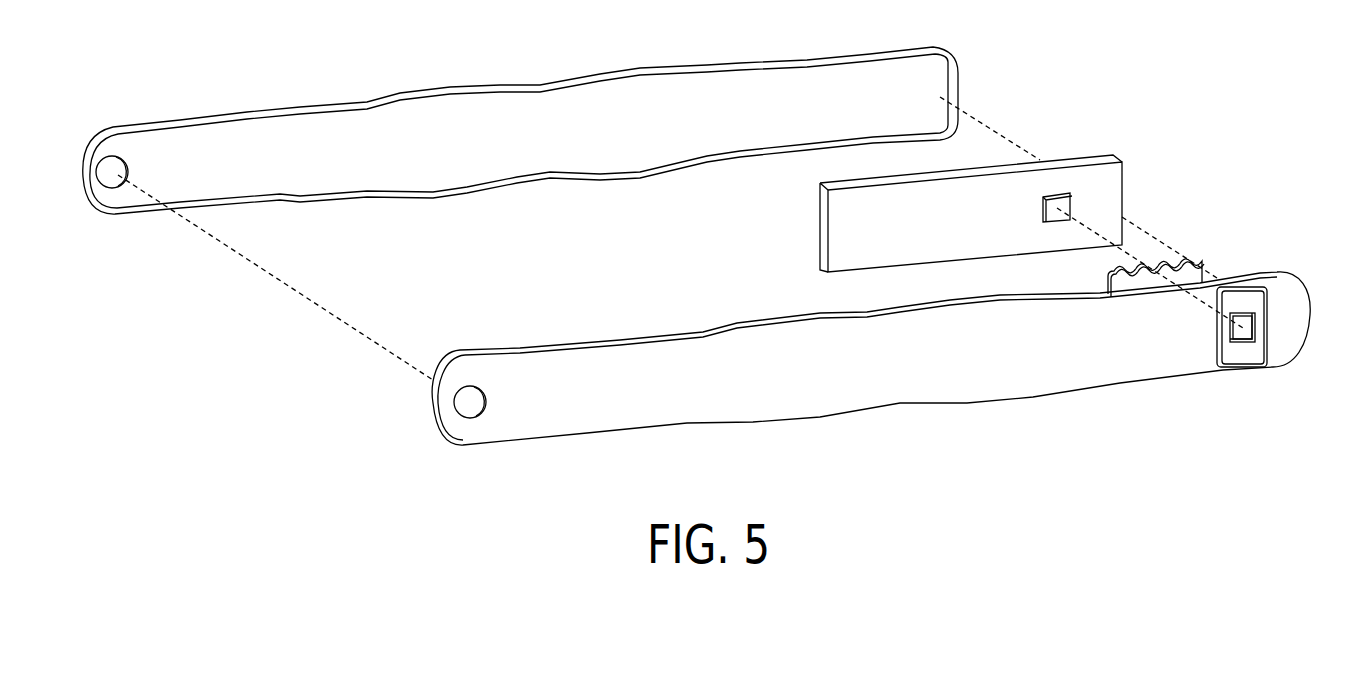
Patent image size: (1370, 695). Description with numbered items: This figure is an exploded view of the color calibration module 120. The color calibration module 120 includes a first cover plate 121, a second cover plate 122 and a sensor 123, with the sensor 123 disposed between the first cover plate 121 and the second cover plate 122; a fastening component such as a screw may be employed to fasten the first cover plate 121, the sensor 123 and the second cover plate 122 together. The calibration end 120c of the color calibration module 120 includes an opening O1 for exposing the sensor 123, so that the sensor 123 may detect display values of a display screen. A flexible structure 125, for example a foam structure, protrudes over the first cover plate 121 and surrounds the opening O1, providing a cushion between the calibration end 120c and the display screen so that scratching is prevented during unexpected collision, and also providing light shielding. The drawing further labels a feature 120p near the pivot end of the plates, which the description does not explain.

The color calibration module 120 is at (1322, 231).
The first cover plate 121 is at (1288, 298).
The second cover plate 122 is at (957, 89).
The sensor 123 is at (1110, 187).
The flexible structure 125 is at (1257, 348).
The opening O1 is at (1247, 327).
The calibration end 120c is at (1240, 367).
The pivot hole 120p is at (473, 448).